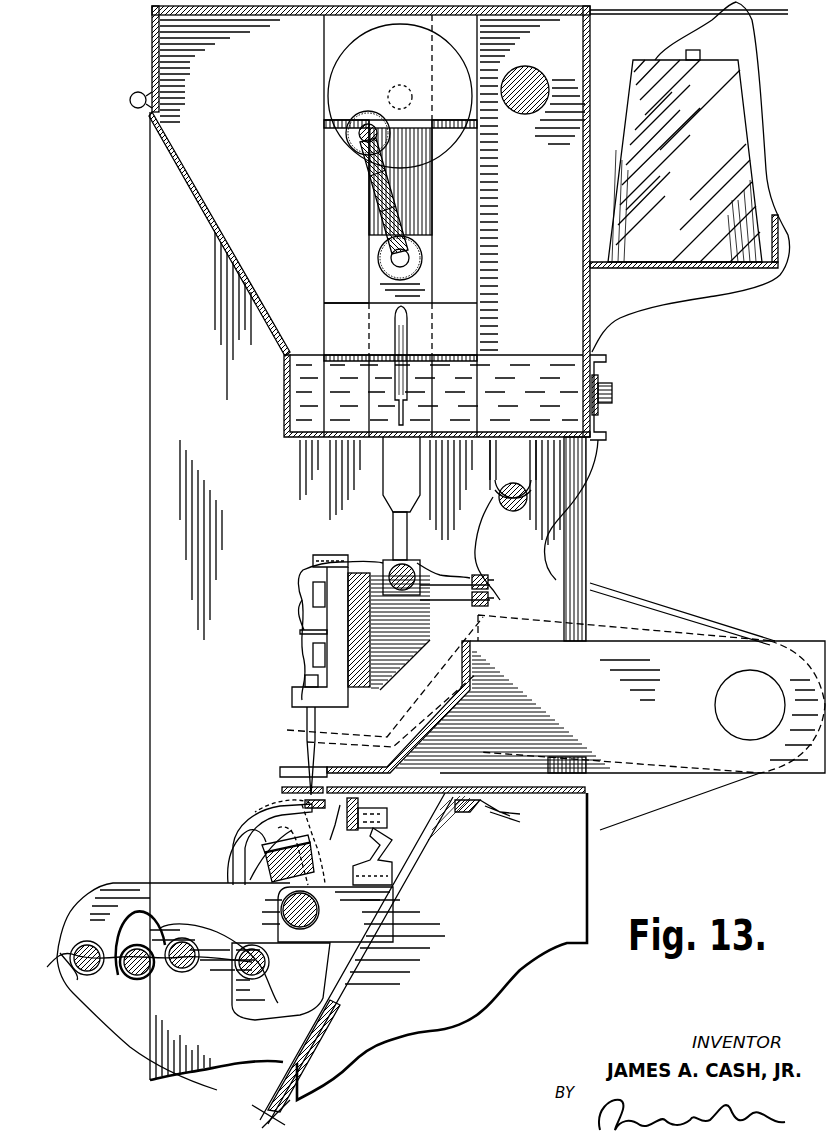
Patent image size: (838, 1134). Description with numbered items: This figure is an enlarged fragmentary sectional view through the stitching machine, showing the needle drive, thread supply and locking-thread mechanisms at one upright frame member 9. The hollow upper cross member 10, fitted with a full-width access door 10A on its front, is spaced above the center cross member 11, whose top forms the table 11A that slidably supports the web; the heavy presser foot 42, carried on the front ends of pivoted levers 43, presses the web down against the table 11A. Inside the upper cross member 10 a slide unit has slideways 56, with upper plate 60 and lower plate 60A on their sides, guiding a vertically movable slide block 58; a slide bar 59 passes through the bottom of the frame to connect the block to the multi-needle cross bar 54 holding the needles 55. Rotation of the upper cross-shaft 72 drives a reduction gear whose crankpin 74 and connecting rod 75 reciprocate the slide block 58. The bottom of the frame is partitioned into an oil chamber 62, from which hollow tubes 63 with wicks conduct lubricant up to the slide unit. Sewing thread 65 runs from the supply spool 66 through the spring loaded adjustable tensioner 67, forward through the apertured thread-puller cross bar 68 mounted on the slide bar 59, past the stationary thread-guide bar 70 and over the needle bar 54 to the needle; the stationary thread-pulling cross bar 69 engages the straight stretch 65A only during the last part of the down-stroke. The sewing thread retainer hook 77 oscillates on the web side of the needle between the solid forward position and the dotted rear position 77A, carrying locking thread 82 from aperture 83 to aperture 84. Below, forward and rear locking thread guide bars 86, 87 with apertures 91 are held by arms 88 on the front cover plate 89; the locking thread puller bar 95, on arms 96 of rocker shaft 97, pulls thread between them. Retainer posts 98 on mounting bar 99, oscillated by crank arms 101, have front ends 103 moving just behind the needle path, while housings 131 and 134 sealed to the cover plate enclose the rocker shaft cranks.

The upright frame member 9 is at (148, 778).
The upper cross member 10 is at (212, 315).
The access door 10A is at (210, 222).
The center cross member 11 is at (496, 919).
The table 11A is at (300, 790).
The presser foot 42 is at (372, 766).
The lever 43 is at (586, 705).
The multi-needle cross bar 54 is at (362, 698).
The sewing needle 55 is at (318, 718).
The slideway 56 is at (324, 182).
The slide block 58 is at (396, 295).
The slide bar 59 is at (375, 488).
The upper plate 60 is at (330, 40).
The lower plate 60A is at (340, 318).
The oil chamber 62 is at (300, 402).
The hollow tube 63 is at (410, 335).
The sewing thread 65 is at (676, 300).
The straight stretch of sewing thread 65A is at (372, 556).
The sewing-thread supply spool 66 is at (692, 172).
The spring loaded adjustable tensioner 67 is at (620, 378).
The thread-puller cross bar 68 is at (478, 575).
The stationary thread-pulling cross bar 69 is at (400, 590).
The stationary thread-guide bar 70 is at (514, 511).
The upper rotary cross-shaft 72 is at (516, 112).
The crankpin 74 is at (362, 148).
The connecting rod 75 is at (380, 205).
The sewing thread retainer hook 77 is at (278, 810).
The rear position of retainer hook 77A is at (266, 838).
The locking thread 82 is at (232, 870).
The aperture 83 is at (250, 818).
The aperture 84 is at (321, 845).
The forward locking thread guide bar 86 is at (85, 940).
The rear locking thread guide bar 87 is at (182, 966).
The arm 88 is at (112, 895).
The front cover plate 89 is at (348, 950).
The aperture 91 is at (47, 967).
The locking thread puller bar 95 is at (137, 970).
The arm 96 is at (216, 926).
The locking thread puller rocker shaft 97 is at (270, 966).
The locking thread retainer post 98 is at (347, 820).
The retainer post mounting bar 99 is at (368, 803).
The crank arm 101 is at (385, 852).
The front end of retainer post 103 is at (300, 800).
The housing 131 is at (355, 921).
The housing 134 is at (300, 995).